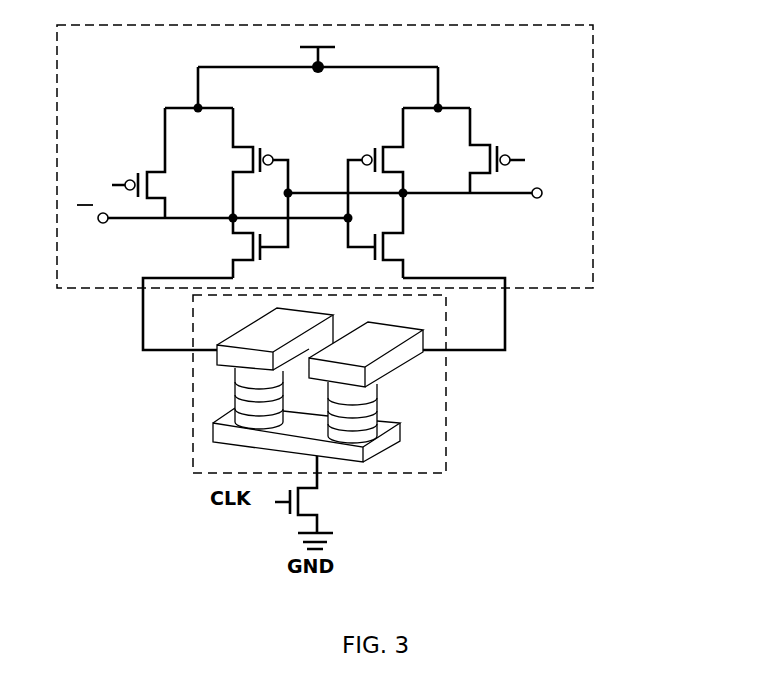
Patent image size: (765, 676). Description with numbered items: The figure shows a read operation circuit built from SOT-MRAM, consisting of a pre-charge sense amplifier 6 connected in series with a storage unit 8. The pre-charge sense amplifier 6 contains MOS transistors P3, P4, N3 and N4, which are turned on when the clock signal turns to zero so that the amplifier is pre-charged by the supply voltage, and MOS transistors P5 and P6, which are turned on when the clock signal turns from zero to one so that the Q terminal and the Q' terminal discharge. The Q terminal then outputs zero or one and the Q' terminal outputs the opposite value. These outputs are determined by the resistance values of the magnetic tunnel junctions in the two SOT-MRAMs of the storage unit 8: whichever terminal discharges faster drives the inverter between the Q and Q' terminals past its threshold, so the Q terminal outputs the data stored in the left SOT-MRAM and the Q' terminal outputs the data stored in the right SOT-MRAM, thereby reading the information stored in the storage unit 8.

The pre-charge sense amplifier 6 is at (373, 187).
The storage unit 8 is at (430, 447).
The MOS transistor P3 is at (260, 163).
The MOS transistor P4 is at (375, 163).
The MOS transistor P5 is at (138, 163).
The MOS transistor P6 is at (497, 150).
The MOS transistor N3 is at (267, 238).
The MOS transistor N4 is at (371, 251).